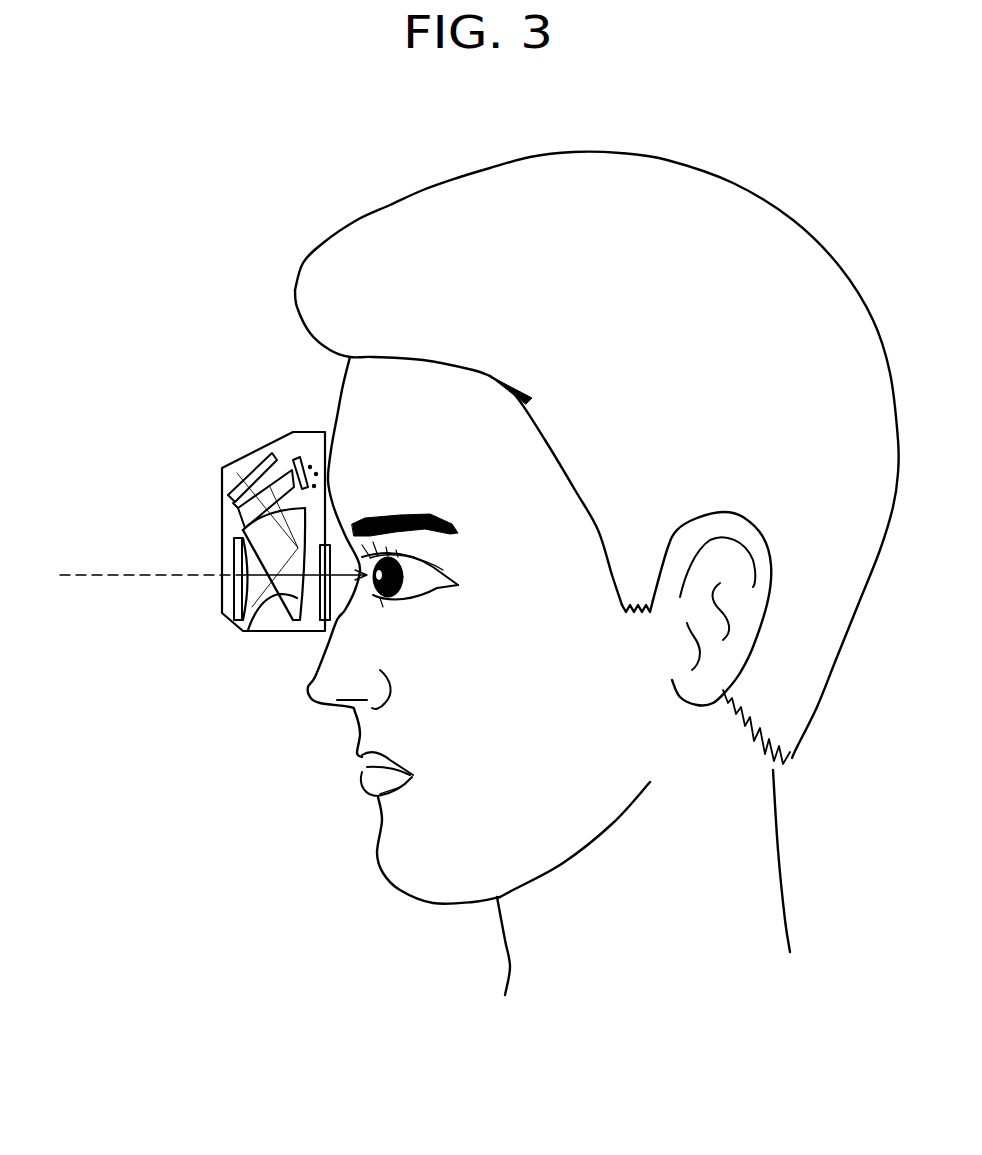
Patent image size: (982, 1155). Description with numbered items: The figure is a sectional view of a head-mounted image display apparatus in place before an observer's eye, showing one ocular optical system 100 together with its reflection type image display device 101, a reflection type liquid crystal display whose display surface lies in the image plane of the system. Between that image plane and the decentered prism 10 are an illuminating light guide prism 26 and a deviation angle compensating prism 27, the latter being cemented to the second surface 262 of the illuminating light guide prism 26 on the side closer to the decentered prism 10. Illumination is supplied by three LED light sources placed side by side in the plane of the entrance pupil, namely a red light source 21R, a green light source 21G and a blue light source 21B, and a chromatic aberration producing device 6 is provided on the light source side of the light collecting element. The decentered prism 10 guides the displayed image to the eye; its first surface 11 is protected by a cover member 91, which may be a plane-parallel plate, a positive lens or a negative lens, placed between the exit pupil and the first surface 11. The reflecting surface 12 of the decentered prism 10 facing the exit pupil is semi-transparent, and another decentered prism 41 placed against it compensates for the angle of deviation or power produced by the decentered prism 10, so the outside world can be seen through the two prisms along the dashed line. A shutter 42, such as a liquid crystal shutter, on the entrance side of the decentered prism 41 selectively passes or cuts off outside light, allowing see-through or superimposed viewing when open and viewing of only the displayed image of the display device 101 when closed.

The ocular optical system 100 is at (200, 650).
The reflection type image display device 101 is at (258, 455).
The illuminating light guide prism 26 is at (288, 450).
The second surface of the illuminating light guide prism 262 is at (235, 505).
The chromatic aberration producing device 6 is at (299, 457).
The light source of B (blue) 21B is at (312, 466).
The light source of G (green) 21G is at (318, 474).
The light source of R (red) 21R is at (316, 486).
The deviation angle compensating prism 27 is at (242, 529).
The decentered prism for compensating deviation 41 is at (236, 560).
The shutter 42 is at (243, 598).
The decentered prism 10 is at (297, 632).
The first surface 11 is at (280, 607).
The reflecting surface 12 is at (243, 628).
The cover member 91 is at (325, 613).